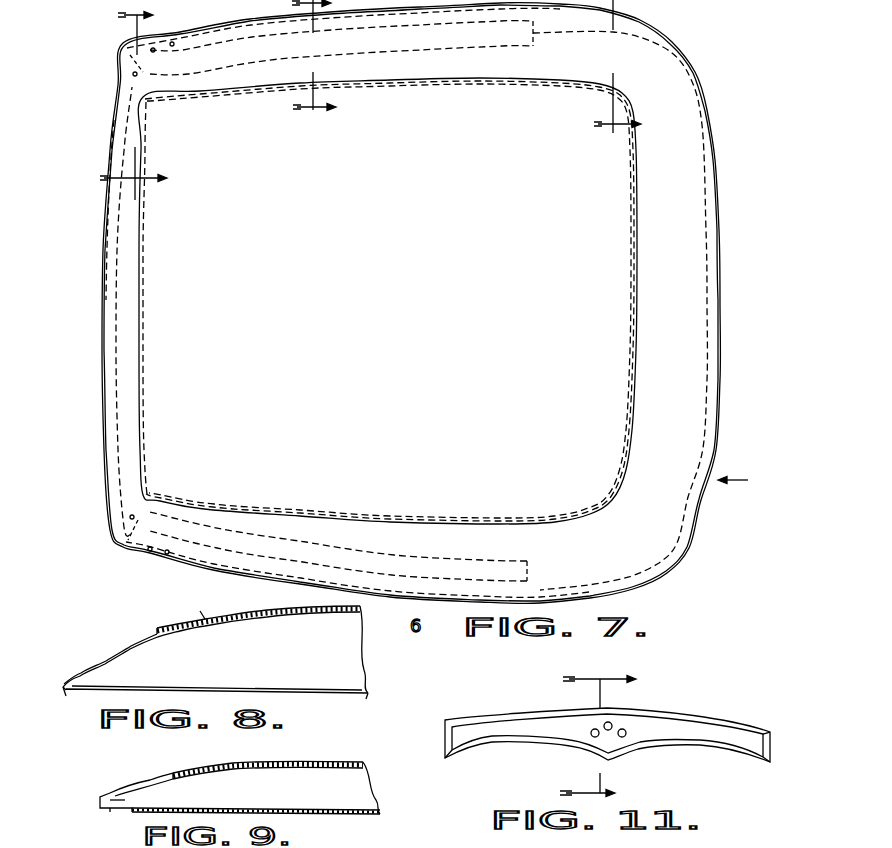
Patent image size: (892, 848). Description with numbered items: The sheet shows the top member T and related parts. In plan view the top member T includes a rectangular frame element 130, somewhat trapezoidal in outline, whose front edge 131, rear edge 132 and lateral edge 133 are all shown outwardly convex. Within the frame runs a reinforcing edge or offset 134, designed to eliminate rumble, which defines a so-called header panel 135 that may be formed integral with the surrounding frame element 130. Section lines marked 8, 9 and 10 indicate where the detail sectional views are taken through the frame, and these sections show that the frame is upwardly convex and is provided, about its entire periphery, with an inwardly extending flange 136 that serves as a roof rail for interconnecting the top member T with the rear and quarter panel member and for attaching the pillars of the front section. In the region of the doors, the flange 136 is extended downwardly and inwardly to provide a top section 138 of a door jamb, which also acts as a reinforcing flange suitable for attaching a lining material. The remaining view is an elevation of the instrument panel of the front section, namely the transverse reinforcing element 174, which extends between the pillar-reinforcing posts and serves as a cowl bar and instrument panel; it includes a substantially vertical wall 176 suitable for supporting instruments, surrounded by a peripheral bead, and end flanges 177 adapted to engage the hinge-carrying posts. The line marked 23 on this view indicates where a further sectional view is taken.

In FIG. 7, the frame element 130 is at (683, 117).
In FIG. 8, the frame element 130 is at (104, 655).
In FIG. 9, the frame element 130 is at (150, 778).
In FIG. 7, the front edge 131 is at (100, 273).
In FIG. 7, the rear edge 132 is at (724, 267).
In FIG. 7, the lateral edge 133 is at (308, 587).
In FIG. 7, the reinforcing edge 134 is at (633, 258).
In FIG. 7, the header panel 135 is at (600, 192).
In FIG. 8, the header panel 135 is at (305, 617).
In FIG. 9, the header panel 135 is at (322, 763).
In FIG. 8, the inwardly extending flange 136 is at (82, 690).
In FIG. 9, the inwardly extending flange 136 is at (115, 817).
In FIG. 7, the top section of door jamb 138 is at (378, 50).
In FIG. 9, the top section of door jamb 138 is at (130, 810).
In FIG. 11, the transverse reinforcing element 174 is at (685, 703).
In FIG. 11, the vertical wall 176 is at (513, 742).
In FIG. 11, the end flange 177 is at (772, 748).
In FIG. 7, the section line 8- 8 is at (142, 103).
In FIG. 7, the section line 9- 9 is at (627, 68).
In FIG. 7, the section line 10- 10 is at (331, 59).
In FIG. 11, the section line 23- 23 is at (643, 670).
In FIG. 7, the top member T is at (742, 481).